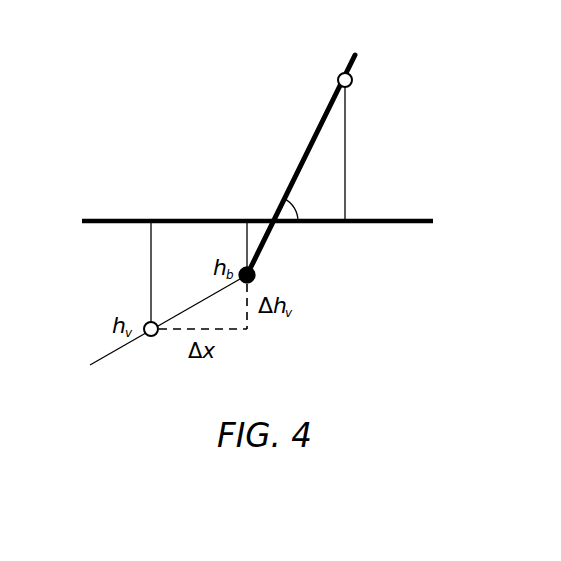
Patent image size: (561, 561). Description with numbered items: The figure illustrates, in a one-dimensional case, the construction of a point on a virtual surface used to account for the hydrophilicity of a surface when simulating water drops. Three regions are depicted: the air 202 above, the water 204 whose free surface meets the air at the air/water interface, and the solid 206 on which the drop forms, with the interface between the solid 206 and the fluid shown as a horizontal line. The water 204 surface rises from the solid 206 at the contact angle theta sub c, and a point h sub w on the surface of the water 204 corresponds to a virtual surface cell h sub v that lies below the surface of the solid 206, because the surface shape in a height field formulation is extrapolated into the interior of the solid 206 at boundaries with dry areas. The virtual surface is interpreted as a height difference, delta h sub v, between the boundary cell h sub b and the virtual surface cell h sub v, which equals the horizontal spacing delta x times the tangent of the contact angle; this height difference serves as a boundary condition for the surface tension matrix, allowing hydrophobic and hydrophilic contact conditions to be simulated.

The air 202 is at (194, 133).
The water 204 is at (332, 161).
The solid 206 is at (257, 254).